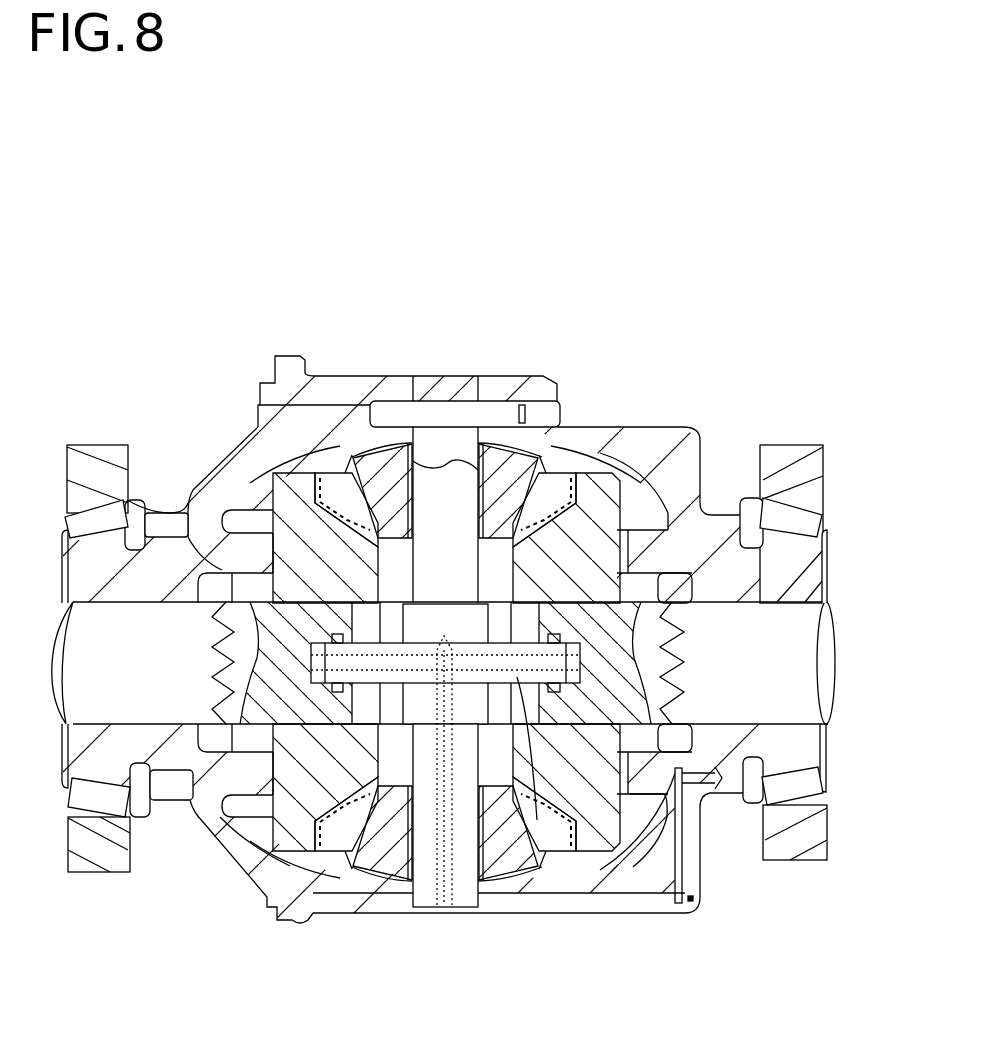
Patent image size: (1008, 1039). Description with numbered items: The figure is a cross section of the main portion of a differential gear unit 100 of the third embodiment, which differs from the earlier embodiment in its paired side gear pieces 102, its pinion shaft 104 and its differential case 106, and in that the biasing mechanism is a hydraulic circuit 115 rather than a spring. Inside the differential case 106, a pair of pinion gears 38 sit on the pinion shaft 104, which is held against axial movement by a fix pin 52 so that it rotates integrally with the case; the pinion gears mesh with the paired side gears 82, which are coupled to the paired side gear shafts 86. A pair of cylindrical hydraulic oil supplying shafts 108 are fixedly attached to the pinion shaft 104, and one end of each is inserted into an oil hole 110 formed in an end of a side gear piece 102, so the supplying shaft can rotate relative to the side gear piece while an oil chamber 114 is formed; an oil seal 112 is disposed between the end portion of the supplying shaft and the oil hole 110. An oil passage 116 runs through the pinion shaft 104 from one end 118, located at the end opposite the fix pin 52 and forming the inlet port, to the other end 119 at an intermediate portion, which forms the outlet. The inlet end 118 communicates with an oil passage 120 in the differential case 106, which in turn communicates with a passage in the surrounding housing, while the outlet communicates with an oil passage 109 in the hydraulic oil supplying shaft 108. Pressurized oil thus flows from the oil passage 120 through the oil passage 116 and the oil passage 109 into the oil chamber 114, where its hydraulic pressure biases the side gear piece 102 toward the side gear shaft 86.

The pinion gear 38 is at (392, 476).
The fix pin 52 is at (392, 415).
The side gear 82 is at (287, 500).
The side gear shaft 86 is at (785, 626).
The differential gear unit 100 is at (644, 312).
The side gear piece 102 is at (620, 495).
The pinion shaft 104 is at (335, 830).
The differential case 106 is at (767, 741).
The hydraulic oil supplying shaft 108 is at (517, 677).
The oil passage 109 is at (548, 634).
The oil hole 110 is at (500, 742).
The oil seal 112 is at (595, 620).
The oil chamber 114 is at (590, 650).
The hydraulic circuit 115 is at (425, 738).
The oil passage 116 is at (438, 840).
The one end 118 is at (480, 910).
The other end 119 is at (500, 650).
The oil passage 120 is at (680, 858).